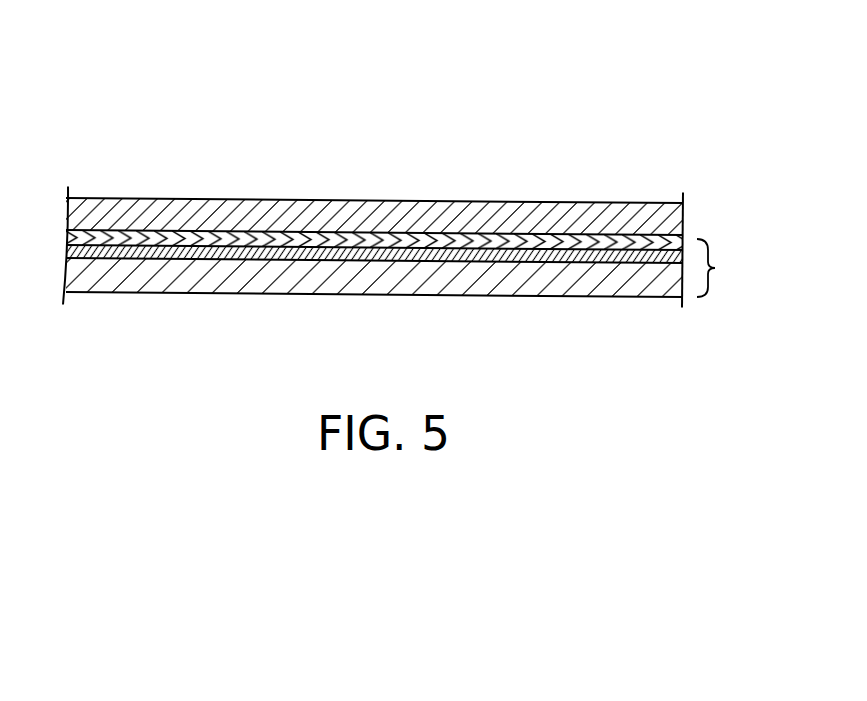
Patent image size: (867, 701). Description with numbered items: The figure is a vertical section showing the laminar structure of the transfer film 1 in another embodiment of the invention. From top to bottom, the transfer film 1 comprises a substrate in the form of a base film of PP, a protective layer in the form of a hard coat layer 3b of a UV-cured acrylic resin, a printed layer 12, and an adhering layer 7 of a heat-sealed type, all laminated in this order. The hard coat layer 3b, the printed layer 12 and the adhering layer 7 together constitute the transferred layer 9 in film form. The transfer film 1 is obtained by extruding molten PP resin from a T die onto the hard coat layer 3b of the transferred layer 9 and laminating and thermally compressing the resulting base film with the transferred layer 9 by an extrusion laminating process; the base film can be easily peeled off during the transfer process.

The transfer film 1 is at (201, 153).
The hard coat layer 3b is at (525, 243).
The printed layer 12 is at (468, 253).
The adhering layer 7 is at (588, 273).
The transferred layer 9 is at (721, 268).